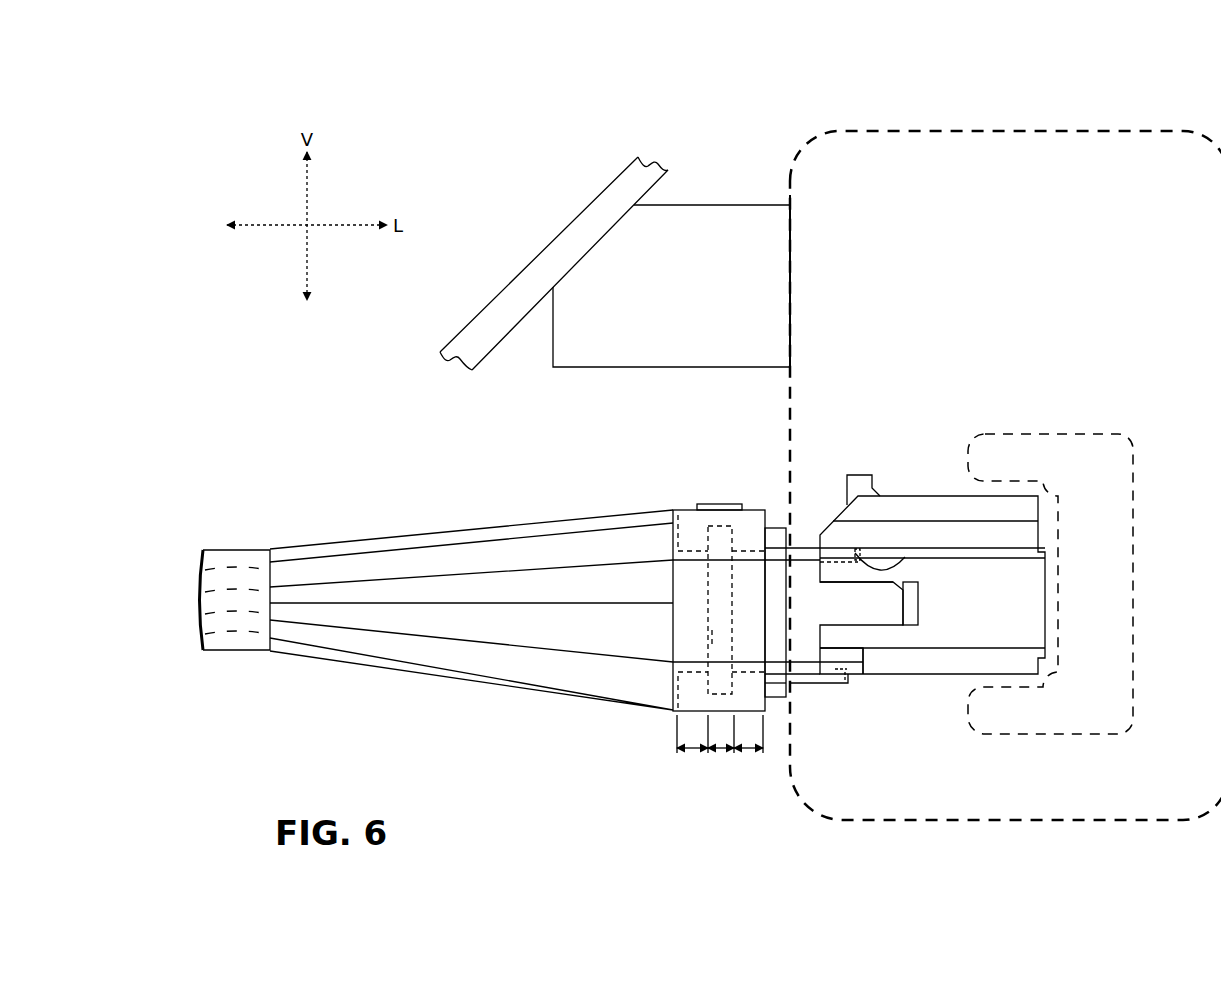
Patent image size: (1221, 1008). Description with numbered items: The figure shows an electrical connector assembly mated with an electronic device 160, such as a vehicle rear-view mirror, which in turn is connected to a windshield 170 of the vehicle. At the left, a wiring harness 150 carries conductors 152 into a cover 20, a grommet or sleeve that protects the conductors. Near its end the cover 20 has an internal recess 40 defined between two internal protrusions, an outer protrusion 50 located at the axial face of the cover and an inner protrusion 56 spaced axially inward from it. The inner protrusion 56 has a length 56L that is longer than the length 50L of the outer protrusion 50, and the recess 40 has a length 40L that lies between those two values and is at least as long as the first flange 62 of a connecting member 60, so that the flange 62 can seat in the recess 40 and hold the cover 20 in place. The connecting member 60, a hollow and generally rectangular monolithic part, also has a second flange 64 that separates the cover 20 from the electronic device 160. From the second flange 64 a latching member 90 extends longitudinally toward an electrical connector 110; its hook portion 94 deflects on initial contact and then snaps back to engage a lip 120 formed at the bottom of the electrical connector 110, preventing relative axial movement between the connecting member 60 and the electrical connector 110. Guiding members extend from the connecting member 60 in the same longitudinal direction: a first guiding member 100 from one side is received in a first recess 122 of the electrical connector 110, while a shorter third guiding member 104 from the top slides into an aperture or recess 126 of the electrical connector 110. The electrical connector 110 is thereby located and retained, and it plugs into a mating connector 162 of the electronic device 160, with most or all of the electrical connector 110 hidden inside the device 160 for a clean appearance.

The cover 20 is at (324, 526).
The recess 40 is at (716, 522).
The outer protrusion 50 is at (748, 538).
The inner protrusion 56 is at (695, 538).
The connecting member 60 is at (778, 514).
The first flange 62 is at (718, 638).
The second flange 64 is at (775, 687).
The latching member 90 is at (820, 680).
The hook portion 94 is at (843, 670).
The first guiding member 100 is at (825, 665).
The third guiding member 104 is at (857, 552).
The electrical connector 110 is at (929, 440).
The lip 120 is at (880, 605).
The first recess 122 is at (919, 600).
The aperture or recess 126 is at (907, 560).
The wiring harness 150 is at (227, 650).
The conductors 152 is at (243, 568).
The electronic device 160 is at (967, 165).
The mating connector 162 is at (1117, 485).
The windshield 170 is at (585, 227).
The length of inner protrusion 56L is at (693, 753).
The length of recess 40L is at (720, 753).
The length of outer protrusion 50L is at (747, 753).